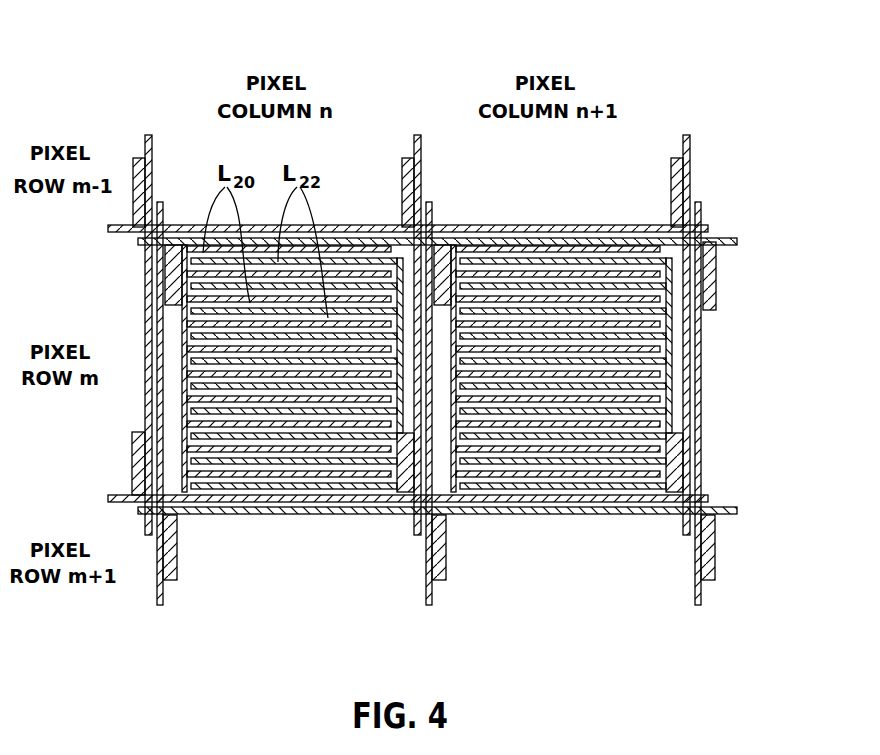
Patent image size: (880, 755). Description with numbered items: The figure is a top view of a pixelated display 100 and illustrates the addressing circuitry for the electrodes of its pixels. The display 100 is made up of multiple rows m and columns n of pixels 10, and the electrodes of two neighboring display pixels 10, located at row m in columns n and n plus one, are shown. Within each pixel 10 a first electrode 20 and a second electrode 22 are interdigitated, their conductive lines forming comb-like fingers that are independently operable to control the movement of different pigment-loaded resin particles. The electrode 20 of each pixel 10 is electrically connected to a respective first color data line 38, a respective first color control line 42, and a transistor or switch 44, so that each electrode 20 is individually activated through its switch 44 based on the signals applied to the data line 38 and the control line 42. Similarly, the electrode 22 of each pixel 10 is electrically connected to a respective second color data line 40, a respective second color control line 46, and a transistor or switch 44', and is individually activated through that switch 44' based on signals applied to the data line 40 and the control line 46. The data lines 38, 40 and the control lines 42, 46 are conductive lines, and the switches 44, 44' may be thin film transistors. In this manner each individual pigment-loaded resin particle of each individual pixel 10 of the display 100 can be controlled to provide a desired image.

The pixelated display 100 is at (411, 70).
The pixel 10 is at (347, 210).
The electrode 20 is at (436, 341).
The electrode 22 is at (406, 267).
The first color data line 38 is at (157, 598).
The second color data line 40 is at (153, 158).
The first color control line 42 is at (716, 230).
The transistor or switch 44 is at (311, 246).
The transistor or switch 44' is at (495, 489).
The second color control line 46 is at (133, 474).